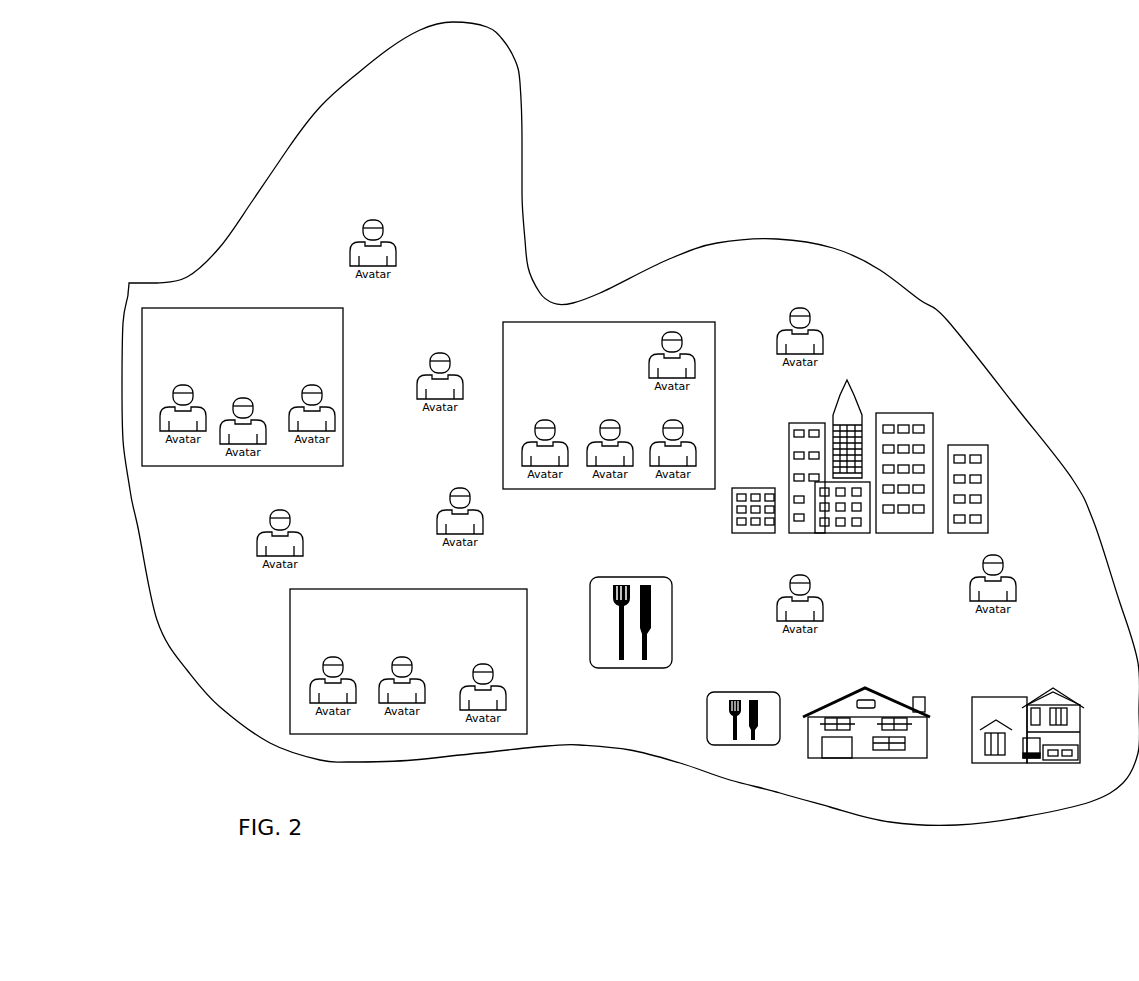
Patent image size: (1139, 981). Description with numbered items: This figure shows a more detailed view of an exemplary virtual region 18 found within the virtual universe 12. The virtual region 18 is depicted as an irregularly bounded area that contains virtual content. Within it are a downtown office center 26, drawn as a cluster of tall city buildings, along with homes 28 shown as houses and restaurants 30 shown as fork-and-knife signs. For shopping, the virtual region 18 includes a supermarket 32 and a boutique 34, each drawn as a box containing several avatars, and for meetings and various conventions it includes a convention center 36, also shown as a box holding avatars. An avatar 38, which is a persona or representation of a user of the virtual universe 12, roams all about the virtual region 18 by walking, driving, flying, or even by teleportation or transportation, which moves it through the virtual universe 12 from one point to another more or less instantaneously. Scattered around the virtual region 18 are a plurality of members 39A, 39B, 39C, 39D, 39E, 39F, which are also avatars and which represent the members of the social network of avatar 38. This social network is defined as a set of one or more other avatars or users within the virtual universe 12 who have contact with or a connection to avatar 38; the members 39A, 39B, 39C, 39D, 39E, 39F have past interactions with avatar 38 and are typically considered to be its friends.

The virtual universe 12 is at (992, 158).
The virtual region 18 is at (522, 82).
The downtown office center 26 is at (928, 406).
The homes 28 is at (876, 758).
The restaurants 30 is at (675, 628).
The supermarket 32 is at (243, 307).
The boutique 34 is at (290, 660).
The convention center 36 is at (598, 491).
The avatar 38 is at (398, 240).
The member 39A is at (268, 515).
The member 39B is at (462, 483).
The member 39C is at (423, 342).
The member 39D is at (793, 305).
The member 39E is at (783, 590).
The member 39F is at (965, 588).